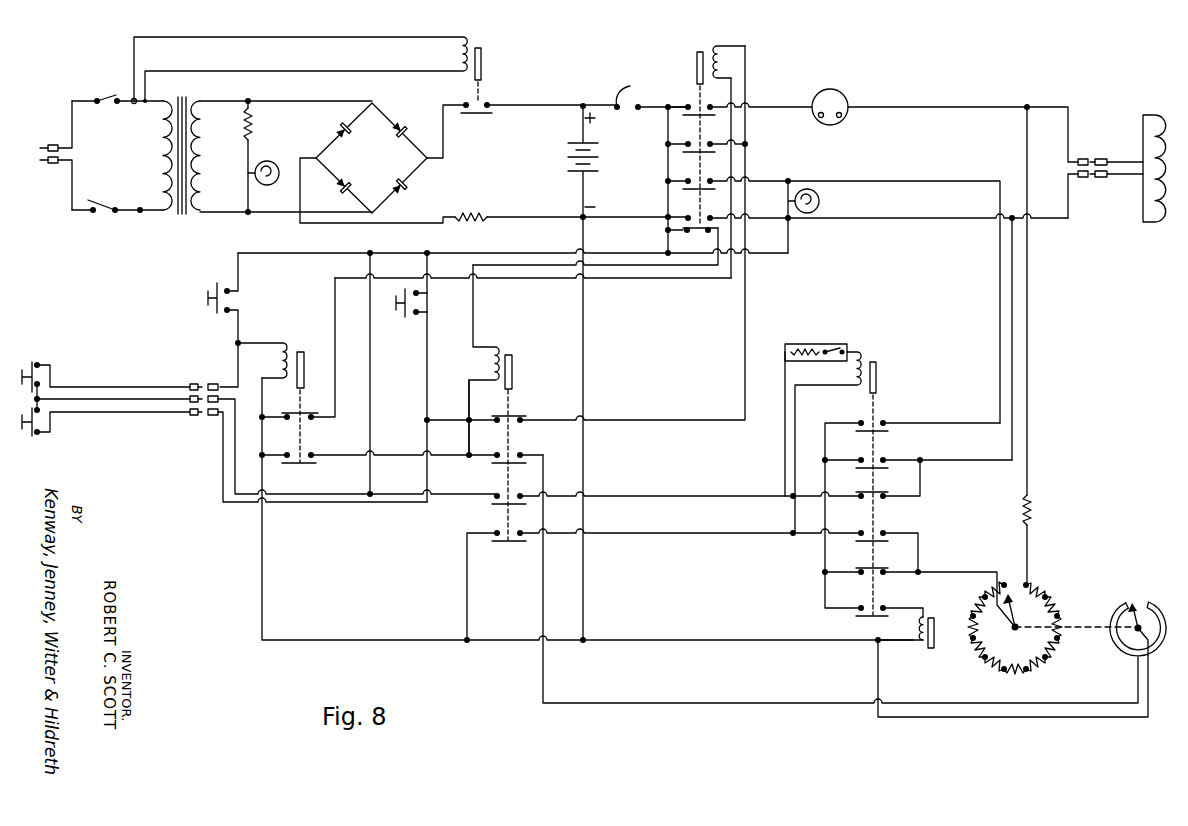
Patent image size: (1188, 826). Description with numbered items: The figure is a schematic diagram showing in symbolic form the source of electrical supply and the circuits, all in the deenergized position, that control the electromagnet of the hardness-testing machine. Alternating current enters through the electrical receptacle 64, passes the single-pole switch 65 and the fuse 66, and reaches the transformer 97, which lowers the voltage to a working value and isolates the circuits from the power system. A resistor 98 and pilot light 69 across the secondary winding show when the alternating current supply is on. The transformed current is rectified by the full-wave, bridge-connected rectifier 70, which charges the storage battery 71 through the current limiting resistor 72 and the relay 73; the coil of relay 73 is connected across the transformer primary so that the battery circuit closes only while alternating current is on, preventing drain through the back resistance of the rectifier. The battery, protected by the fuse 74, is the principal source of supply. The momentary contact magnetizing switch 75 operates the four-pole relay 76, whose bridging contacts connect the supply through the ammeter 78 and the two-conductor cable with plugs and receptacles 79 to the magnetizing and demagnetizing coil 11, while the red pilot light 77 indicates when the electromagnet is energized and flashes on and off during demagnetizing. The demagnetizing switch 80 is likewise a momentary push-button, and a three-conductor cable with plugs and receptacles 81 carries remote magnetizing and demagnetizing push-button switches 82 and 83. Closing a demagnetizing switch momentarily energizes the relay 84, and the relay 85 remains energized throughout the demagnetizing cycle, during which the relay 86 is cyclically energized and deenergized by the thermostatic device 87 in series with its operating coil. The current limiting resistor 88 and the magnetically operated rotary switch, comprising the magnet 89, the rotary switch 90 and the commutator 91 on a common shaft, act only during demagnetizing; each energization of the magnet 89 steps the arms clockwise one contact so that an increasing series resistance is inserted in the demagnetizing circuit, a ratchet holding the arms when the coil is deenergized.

The magnetizing and demagnetizing coil 11 is at (1160, 228).
The electrical receptacle 64 is at (53, 172).
The single-pole switch 65 is at (100, 216).
The fuse 66 is at (110, 93).
The pilot light 69 is at (265, 157).
The full-wave, bridge-connected rectifier 70 is at (384, 167).
The storage battery 71 is at (603, 157).
The current limiting resistor 72 is at (470, 207).
The relay 73 is at (487, 92).
The fuse 74 is at (633, 93).
The magnetizing switch 75 is at (402, 311).
The four-pole relay 76 is at (693, 62).
The red pilot light 77 is at (820, 201).
The ammeter 78 is at (848, 96).
The two-conductor cable with plugs and receptacles 79 is at (1096, 153).
The demagnetizing switch 80 is at (213, 292).
The three-conductor cable with plugs and receptacles 81 is at (203, 378).
The magnetizing push-button switch 82 is at (26, 362).
The demagnetizing push-button switch 83 is at (25, 436).
The relay 84 is at (302, 343).
The relay 85 is at (510, 350).
The relay 86 is at (880, 373).
The thermostatic device 87 is at (808, 342).
The current limiting resistor 88 is at (1030, 513).
The magnet 89 is at (927, 655).
The rotary switch 90 is at (1060, 673).
The commutator 91 is at (1158, 592).
The transformer 97 is at (182, 218).
The resistor 98 is at (260, 127).